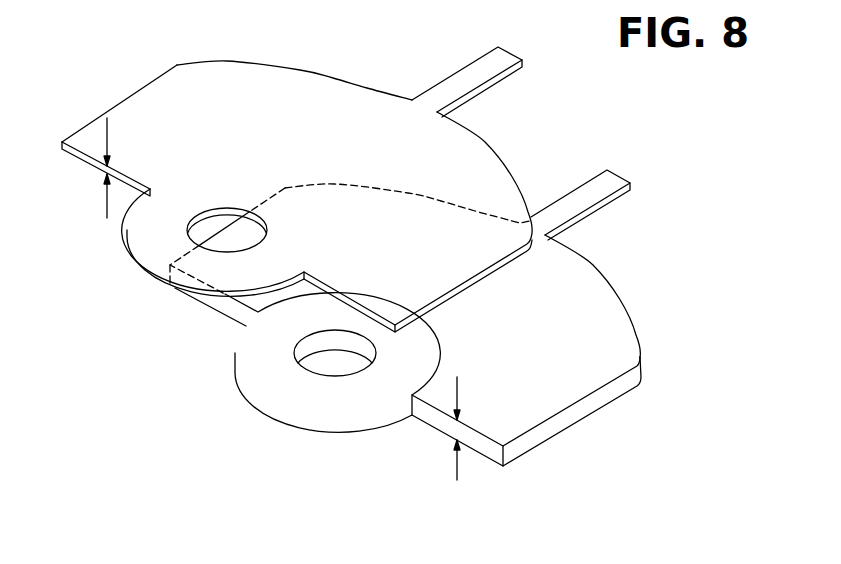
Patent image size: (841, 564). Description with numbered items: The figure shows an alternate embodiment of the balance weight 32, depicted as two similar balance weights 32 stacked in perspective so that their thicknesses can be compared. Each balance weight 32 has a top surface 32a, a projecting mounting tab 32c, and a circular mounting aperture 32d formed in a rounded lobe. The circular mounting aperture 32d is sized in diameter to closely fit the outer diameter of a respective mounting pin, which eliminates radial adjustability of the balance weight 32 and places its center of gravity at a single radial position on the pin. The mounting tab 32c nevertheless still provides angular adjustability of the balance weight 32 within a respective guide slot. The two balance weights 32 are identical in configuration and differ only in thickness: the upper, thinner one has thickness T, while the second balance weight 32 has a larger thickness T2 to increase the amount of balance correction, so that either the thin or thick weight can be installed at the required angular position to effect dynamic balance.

The balance weight 32 is at (490, 140).
The top surface of spacer plate 32a is at (266, 138).
The mounting tab 32c is at (472, 63).
The circular mounting aperture 32d is at (252, 240).
The thickness T is at (105, 207).
The larger thickness T2 is at (453, 472).